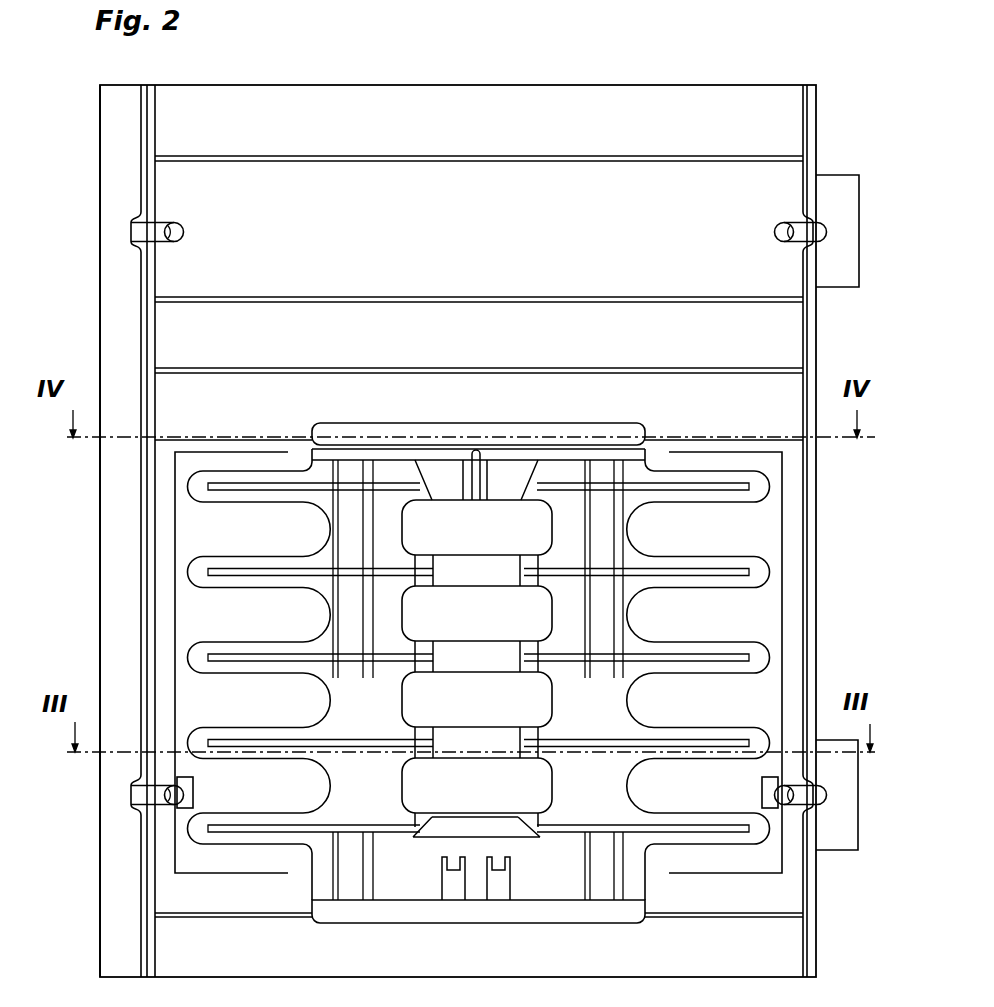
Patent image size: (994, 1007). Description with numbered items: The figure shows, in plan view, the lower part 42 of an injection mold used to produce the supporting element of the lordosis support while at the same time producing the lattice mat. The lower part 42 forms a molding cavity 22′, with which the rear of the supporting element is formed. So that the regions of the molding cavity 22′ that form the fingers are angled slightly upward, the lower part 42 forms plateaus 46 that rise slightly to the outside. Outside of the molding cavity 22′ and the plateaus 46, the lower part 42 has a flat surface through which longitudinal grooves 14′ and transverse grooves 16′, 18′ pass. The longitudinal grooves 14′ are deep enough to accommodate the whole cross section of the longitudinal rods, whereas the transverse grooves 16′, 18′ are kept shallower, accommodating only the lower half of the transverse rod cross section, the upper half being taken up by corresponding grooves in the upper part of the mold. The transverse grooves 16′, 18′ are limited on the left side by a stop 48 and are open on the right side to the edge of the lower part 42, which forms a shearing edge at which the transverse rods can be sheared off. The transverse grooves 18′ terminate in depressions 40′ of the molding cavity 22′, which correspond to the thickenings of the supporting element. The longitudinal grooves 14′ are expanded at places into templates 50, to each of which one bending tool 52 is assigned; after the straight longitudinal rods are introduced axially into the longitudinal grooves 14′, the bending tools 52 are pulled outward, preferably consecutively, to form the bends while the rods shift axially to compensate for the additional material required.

The lower part of the mold 42 is at (653, 73).
The longitudinal grooves 14′ is at (152, 109).
The transverse grooves 16′ is at (415, 162).
The transverse grooves 18′ is at (205, 437).
The molding cavity 22′ is at (648, 425).
The depressions 40′ is at (393, 424).
The plateaus 46 is at (783, 531).
The stop 48 is at (138, 311).
The templates 50 is at (138, 222).
The bending tools 52 is at (185, 233).